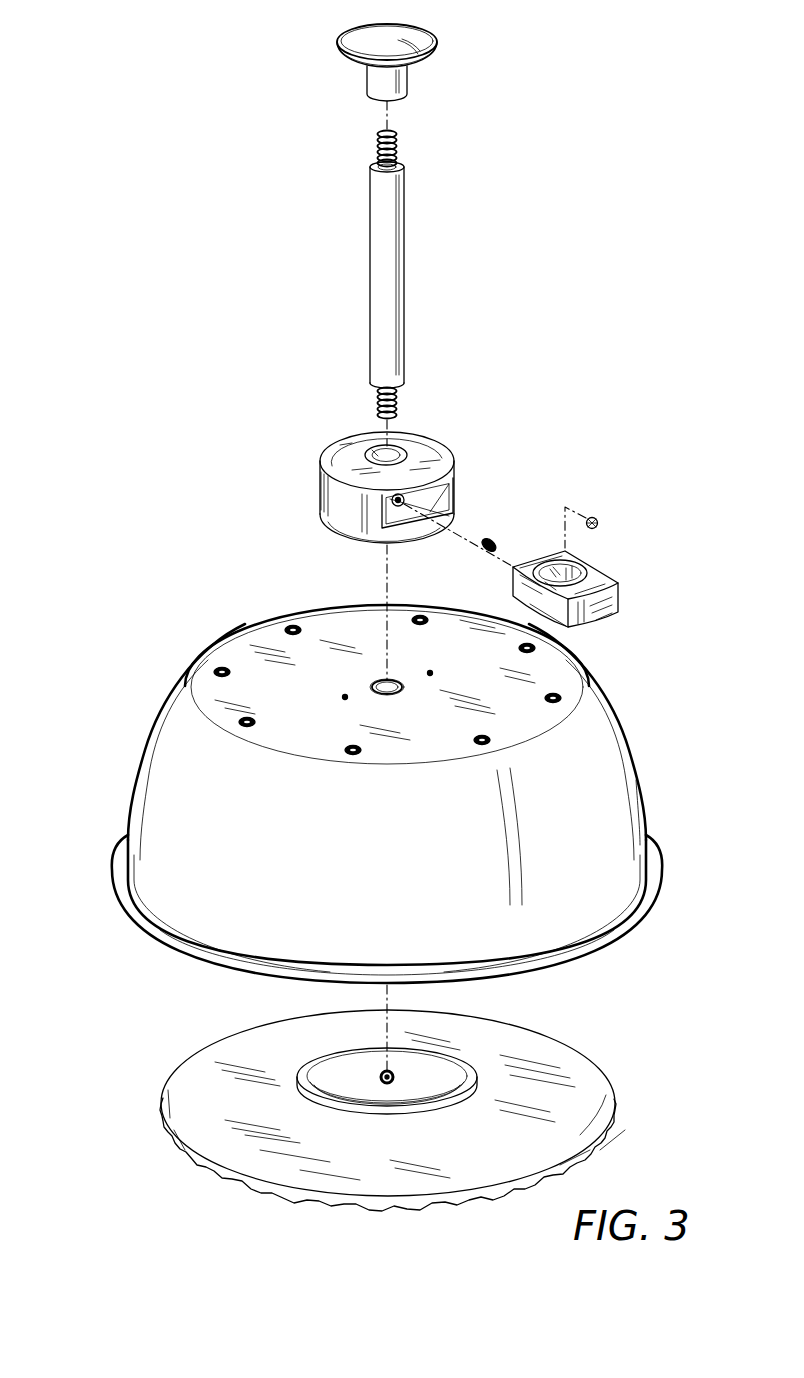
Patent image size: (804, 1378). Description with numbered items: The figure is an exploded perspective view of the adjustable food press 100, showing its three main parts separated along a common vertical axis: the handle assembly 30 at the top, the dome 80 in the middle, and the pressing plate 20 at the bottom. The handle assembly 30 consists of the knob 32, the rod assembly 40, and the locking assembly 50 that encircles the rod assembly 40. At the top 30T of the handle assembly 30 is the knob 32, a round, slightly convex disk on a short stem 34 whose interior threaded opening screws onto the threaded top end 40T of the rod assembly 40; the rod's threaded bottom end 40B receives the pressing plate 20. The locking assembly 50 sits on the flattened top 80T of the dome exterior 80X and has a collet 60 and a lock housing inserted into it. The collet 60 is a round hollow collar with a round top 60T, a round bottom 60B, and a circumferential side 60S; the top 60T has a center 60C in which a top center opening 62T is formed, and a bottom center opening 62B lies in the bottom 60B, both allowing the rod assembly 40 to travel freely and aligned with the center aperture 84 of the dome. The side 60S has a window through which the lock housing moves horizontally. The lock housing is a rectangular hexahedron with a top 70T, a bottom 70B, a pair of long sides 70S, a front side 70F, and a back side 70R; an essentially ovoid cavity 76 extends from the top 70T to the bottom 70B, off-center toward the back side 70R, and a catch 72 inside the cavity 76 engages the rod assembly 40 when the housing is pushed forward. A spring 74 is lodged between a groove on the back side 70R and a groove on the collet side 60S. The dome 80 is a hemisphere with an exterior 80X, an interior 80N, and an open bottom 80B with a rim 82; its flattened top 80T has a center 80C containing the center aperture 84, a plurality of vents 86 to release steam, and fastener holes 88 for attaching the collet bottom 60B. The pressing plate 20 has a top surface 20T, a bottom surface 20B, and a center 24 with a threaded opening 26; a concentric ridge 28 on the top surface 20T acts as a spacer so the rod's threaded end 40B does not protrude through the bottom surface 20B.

The adjustable food press 100 is at (130, 662).
The handle assembly 30 is at (432, 328).
The knob 32 is at (405, 30).
The top of the handle assembly 30T is at (337, 52).
The short stem 34 is at (367, 90).
The rod assembly 40 is at (415, 188).
The top end of the rod assembly 40T is at (380, 134).
The bottom end of the rod assembly 40B is at (396, 412).
The locking assembly 50 is at (282, 483).
The collet 60 is at (453, 468).
The center of the collet top 60C is at (406, 453).
The top of the collet 60T is at (360, 437).
The circumferential side of the collet 60S is at (320, 505).
The bottom of the collet 60B is at (330, 533).
The top center opening 62T is at (376, 450).
The bottom center opening 62B is at (400, 505).
The spring 74 is at (486, 538).
The catch 72 is at (598, 515).
The top of the lock housing 70T is at (592, 578).
The back side of the lock housing 70R is at (540, 562).
The cavity 76 is at (580, 568).
The long sides of the lock housing 70S is at (516, 592).
The front side of the lock housing 70F is at (614, 612).
The bottom of the lock housing 70B is at (605, 620).
The dome 80 is at (135, 772).
The flattened top of the dome 80T is at (238, 628).
The exterior of the dome 80X is at (130, 922).
The rim 82 is at (642, 910).
The open bottom of the dome 80B is at (178, 950).
The interior of the dome 80N is at (200, 884).
The center aperture 84 is at (380, 680).
The center of the dome top 80C is at (398, 692).
The fastener holes 88 is at (430, 670).
The vents 86 is at (552, 701).
The pressing plate 20 is at (578, 1052).
The top surface of the pressing plate 20T is at (282, 1112).
The bottom surface of the pressing plate 20B is at (235, 1186).
The concentric ridge 28 is at (466, 1098).
The center of the pressing plate 24 is at (394, 1078).
The threaded opening 26 is at (380, 1077).